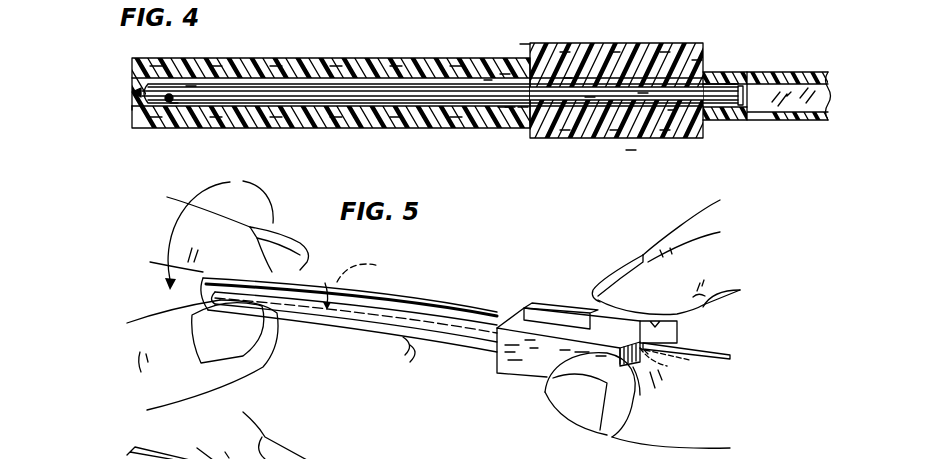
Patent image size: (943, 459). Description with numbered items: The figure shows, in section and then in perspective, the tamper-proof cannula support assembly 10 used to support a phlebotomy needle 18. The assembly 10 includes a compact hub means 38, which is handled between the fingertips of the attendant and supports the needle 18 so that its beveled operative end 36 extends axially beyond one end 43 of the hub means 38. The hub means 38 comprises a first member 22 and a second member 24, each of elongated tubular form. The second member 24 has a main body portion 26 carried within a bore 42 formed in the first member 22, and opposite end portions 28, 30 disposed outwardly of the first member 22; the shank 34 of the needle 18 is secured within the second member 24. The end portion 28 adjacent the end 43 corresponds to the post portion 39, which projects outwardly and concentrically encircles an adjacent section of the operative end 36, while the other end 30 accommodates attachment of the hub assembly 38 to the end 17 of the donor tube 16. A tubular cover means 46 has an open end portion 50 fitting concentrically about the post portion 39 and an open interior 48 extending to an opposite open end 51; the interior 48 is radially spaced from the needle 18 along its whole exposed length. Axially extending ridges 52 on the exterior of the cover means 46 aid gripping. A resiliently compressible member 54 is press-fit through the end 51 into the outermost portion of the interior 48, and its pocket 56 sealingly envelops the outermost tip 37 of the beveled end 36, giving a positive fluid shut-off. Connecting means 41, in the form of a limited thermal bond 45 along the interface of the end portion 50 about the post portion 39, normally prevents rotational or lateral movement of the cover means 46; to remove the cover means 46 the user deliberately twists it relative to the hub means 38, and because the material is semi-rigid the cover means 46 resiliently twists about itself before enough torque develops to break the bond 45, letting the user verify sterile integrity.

In FIG. 5, the assembly 10 is at (543, 275).
In FIG. 4, the donor tube 16 is at (803, 116).
In FIG. 5, the donor tube 16 is at (720, 354).
In FIG. 4, the end of the donor tube 17 is at (725, 118).
In FIG. 5, the end of the donor tube 17 is at (617, 433).
In FIG. 4, the phlebotomy needle 18 is at (437, 96).
In FIG. 5, the phlebotomy needle 18 is at (355, 312).
In FIG. 4, the first member 22 is at (705, 45).
In FIG. 5, the first member 22 is at (513, 360).
In FIG. 4, the second member 24 is at (697, 60).
In FIG. 4, the main body portion 26 is at (643, 92).
In FIG. 4, the end portion 28 is at (510, 108).
In FIG. 4, the end portion 30 is at (730, 83).
In FIG. 5, the end portion 30 is at (680, 343).
In FIG. 4, the shank 34 is at (590, 97).
In FIG. 4, the operative end 36 is at (190, 88).
In FIG. 4, the outermost tip 37 is at (174, 104).
In FIG. 4, the hub means 38 is at (632, 156).
In FIG. 5, the hub means 38 is at (530, 398).
In FIG. 4, the post portion 39 is at (506, 68).
In FIG. 4, the connecting means 41 is at (487, 85).
In FIG. 4, the bore 42 is at (568, 80).
In FIG. 4, the one end of the hub means 43 is at (525, 44).
In FIG. 5, the one end of the hub means 43 is at (543, 307).
In FIG. 4, the thermal bond 45 is at (523, 108).
In FIG. 4, the cover means 46 is at (364, 50).
In FIG. 5, the cover means 46 is at (412, 277).
In FIG. 4, the open interior 48 is at (307, 80).
In FIG. 4, the open end portion 50 is at (503, 108).
In FIG. 4, the open end 51 is at (119, 109).
In FIG. 5, the ridges 52 is at (410, 357).
In FIG. 4, the member 54 is at (167, 106).
In FIG. 4, the pocket 56 is at (135, 94).